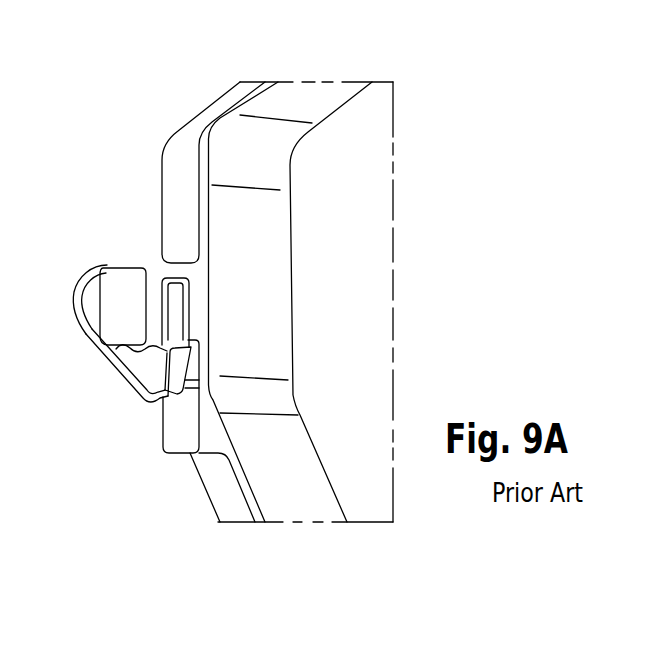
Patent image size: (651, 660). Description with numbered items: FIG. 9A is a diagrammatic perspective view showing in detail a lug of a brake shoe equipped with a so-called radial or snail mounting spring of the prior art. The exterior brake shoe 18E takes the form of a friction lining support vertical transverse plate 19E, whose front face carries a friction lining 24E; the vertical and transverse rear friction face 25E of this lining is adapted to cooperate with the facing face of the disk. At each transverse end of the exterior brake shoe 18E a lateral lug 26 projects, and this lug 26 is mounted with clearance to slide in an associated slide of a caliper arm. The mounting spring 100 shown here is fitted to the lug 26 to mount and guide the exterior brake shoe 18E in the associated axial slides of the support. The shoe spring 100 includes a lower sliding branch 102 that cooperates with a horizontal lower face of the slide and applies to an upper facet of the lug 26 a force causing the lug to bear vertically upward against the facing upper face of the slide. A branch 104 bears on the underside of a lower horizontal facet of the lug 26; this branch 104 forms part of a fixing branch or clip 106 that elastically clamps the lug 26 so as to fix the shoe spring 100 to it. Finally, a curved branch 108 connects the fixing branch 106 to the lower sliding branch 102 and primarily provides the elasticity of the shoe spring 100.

The exterior brake shoe 18E is at (333, 65).
The friction lining support vertical transverse plate 19E is at (185, 158).
The friction lining 24E is at (289, 302).
The rear friction face 25E is at (354, 151).
The lateral lug 26 is at (127, 292).
The mounting spring 100 is at (151, 344).
The lower sliding branch 102 is at (158, 413).
The branch 104 is at (118, 347).
The fixing branch or clip 106 is at (177, 318).
The curved branch 108 is at (88, 298).